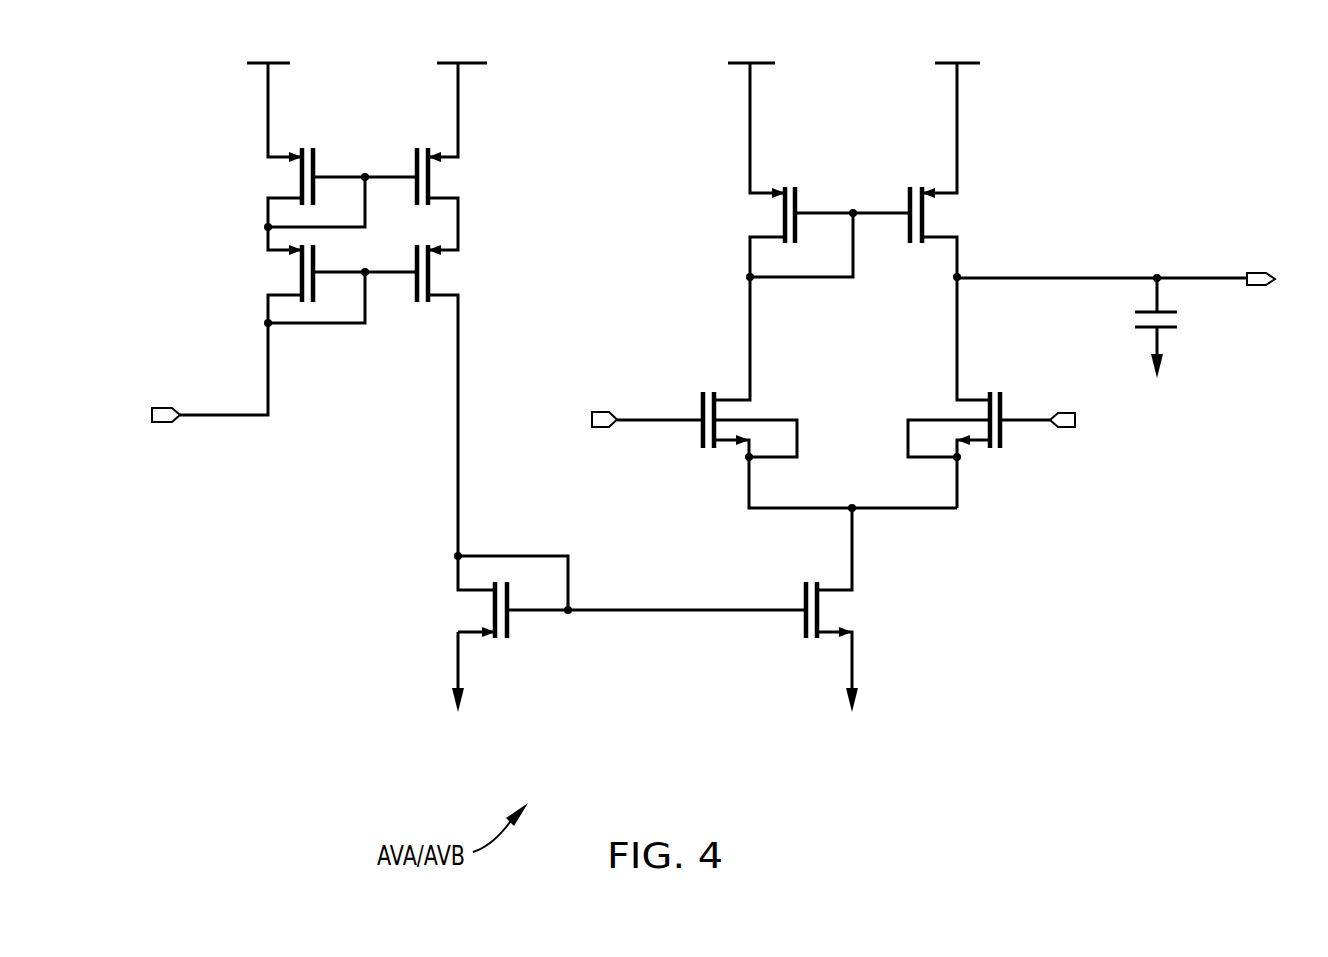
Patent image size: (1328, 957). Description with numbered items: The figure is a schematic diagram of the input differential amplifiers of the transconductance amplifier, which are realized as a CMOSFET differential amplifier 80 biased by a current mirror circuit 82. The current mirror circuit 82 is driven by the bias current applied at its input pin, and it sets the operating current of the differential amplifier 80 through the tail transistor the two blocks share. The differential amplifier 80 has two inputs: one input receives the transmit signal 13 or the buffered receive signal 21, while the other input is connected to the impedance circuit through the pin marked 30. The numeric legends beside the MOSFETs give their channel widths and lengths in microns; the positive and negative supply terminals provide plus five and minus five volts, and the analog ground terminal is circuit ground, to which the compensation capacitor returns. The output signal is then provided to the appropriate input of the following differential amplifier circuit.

The current mirror circuit 82 is at (378, 370).
The CMOSFET differential amplifier 80 is at (863, 327).
The transmit signal 13 is at (635, 414).
The buffered receive signal 21 is at (675, 418).
The compensation node terminal (to/from Zc) 30 is at (1061, 413).